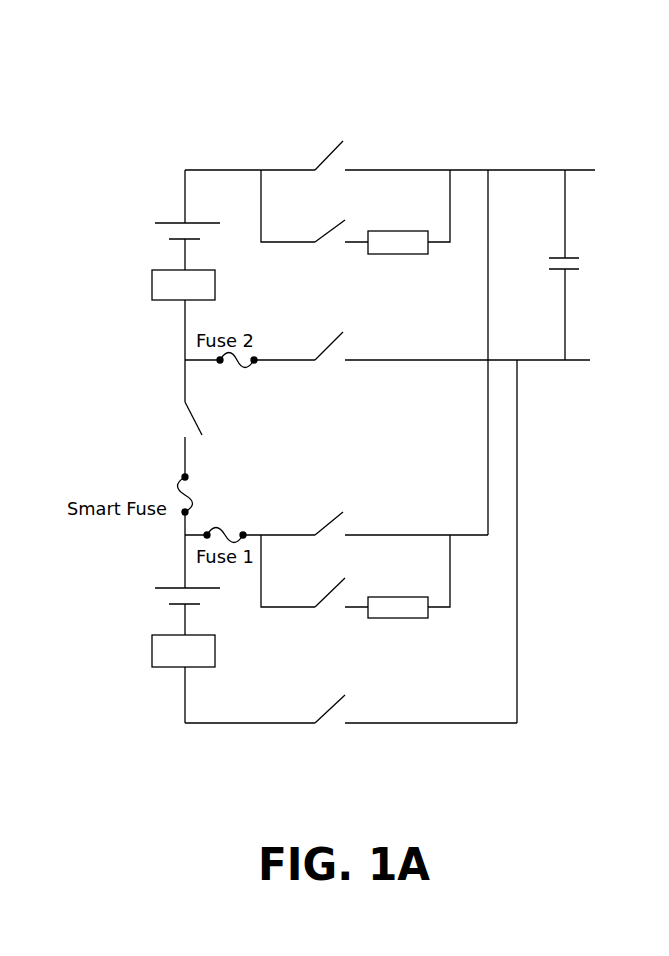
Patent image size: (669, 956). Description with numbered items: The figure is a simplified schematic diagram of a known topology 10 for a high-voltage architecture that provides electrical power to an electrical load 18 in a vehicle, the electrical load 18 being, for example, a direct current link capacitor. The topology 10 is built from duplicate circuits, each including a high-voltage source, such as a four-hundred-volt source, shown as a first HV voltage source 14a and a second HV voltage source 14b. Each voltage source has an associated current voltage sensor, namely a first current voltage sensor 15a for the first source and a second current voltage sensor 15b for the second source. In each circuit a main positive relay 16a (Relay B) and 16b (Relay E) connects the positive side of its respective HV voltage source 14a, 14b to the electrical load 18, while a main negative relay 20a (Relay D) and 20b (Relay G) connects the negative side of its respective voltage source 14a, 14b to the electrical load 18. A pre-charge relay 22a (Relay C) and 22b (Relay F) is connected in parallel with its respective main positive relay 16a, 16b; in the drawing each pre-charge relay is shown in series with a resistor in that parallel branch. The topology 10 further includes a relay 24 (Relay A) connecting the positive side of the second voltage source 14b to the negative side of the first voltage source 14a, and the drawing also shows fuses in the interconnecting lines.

The topology 10 is at (497, 75).
The HV voltage source 14a is at (160, 202).
The current voltage sensor 15a is at (142, 272).
The main positive relay 16a is at (360, 145).
The pre-charge relay 22a is at (350, 265).
The electrical load 18 is at (573, 245).
The relay 24 is at (170, 420).
The main negative relay 20a is at (347, 372).
The main positive relay 16b is at (370, 505).
The HV voltage source 14b is at (152, 603).
The current voltage sensor 15b is at (162, 677).
The pre-charge relay 22b is at (345, 625).
The main negative relay 20b is at (345, 735).